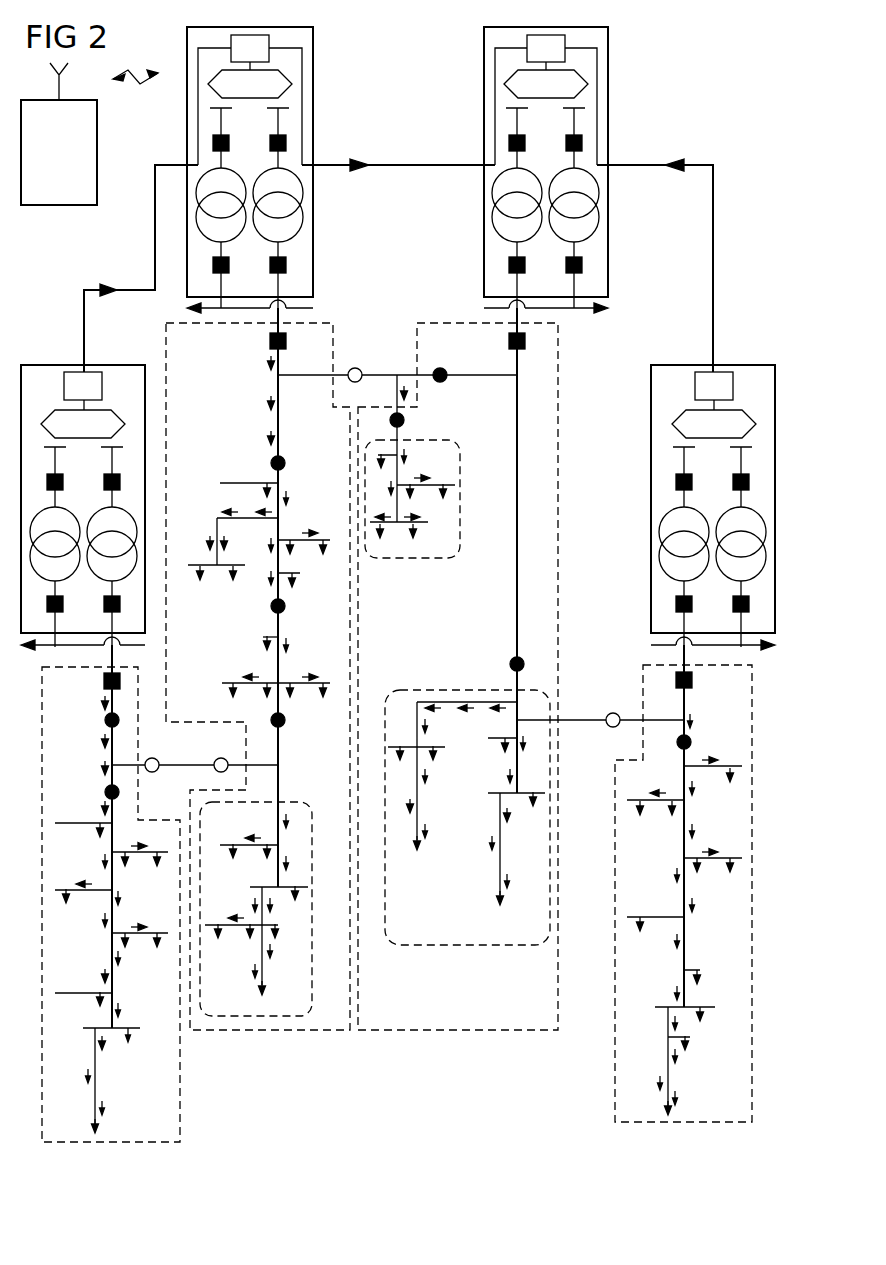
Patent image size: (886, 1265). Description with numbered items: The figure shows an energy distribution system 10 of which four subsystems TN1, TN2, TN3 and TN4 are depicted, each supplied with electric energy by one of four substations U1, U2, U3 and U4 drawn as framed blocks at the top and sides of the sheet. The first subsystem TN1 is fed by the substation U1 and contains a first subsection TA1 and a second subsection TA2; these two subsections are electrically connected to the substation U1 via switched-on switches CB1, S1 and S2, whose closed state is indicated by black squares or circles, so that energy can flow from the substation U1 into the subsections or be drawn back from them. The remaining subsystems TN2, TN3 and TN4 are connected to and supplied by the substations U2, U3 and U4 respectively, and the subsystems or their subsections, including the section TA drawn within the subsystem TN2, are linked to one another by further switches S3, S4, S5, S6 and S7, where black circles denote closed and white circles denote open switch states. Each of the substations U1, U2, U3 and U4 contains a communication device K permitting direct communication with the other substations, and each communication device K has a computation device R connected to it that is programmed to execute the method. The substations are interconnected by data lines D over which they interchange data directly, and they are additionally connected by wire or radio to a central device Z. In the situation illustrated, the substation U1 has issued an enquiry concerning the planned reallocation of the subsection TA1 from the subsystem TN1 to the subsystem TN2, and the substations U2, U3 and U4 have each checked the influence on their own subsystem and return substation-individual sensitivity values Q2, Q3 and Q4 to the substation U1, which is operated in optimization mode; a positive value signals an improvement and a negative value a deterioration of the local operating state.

The energy distribution system 10 is at (690, 90).
The central device Z is at (59, 134).
The data line D is at (155, 235).
The substation-individual sensitivity value Q2 is at (362, 149).
The substation-individual sensitivity value Q3 is at (108, 275).
The substation-individual sensitivity value Q4 is at (672, 148).
The substation U1 is at (509, 170).
The substation U2 is at (313, 55).
The substation U3 is at (125, 365).
The substation U4 is at (749, 365).
The communication device K is at (546, 48).
The computation device R is at (546, 84).
The first subsystem TN1 is at (418, 642).
The subsystem TN2 is at (265, 676).
The subsystem TN3 is at (160, 893).
The subsystem TN4 is at (634, 883).
The network section TA is at (241, 1020).
The first subsection TA1 is at (416, 560).
The second subsection TA2 is at (453, 948).
The switch S1 is at (441, 360).
The switch S2 is at (502, 668).
The switch S3 is at (616, 706).
The switch S4 is at (359, 360).
The switch S5 is at (296, 725).
The switch S6 is at (159, 754).
The switch S7 is at (222, 754).
The switch CB1 is at (496, 345).